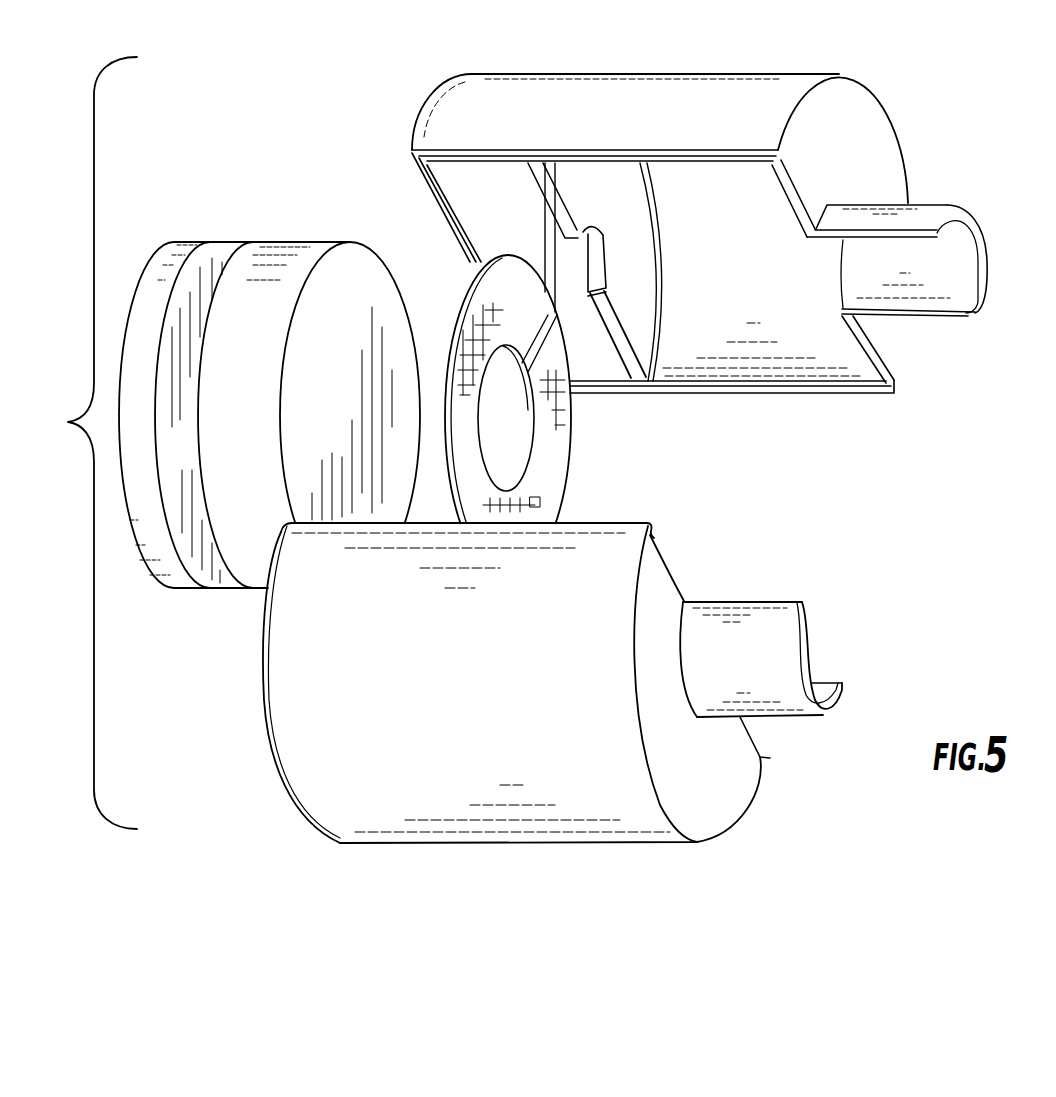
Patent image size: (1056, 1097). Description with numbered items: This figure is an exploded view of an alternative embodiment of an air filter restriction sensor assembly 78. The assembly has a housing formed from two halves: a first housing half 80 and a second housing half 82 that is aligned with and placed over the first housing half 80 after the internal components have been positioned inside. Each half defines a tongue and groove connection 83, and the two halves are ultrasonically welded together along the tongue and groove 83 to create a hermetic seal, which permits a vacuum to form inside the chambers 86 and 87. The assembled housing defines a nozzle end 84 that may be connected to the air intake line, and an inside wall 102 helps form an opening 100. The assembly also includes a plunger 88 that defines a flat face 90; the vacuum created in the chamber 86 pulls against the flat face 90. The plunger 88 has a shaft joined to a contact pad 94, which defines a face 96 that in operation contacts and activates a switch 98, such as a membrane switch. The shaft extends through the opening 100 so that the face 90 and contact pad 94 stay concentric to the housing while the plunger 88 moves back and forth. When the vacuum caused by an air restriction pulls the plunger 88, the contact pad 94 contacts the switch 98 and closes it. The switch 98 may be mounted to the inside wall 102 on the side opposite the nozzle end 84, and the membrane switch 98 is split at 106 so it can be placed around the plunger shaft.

The air filter restriction sensor assembly 78 is at (83, 443).
The first housing half 80 is at (736, 98).
The second housing half 82 is at (610, 793).
The tongue and groove connection 83 is at (881, 392).
The nozzle end 84 is at (927, 212).
The chamber 86 is at (753, 207).
The chamber 87 is at (470, 183).
The plunger 88 is at (292, 250).
The flat face 90 is at (357, 282).
The contact pad 94 is at (187, 247).
The face 96 is at (215, 257).
The switch 98 is at (542, 477).
The opening 100 is at (603, 262).
The inside wall 102 is at (642, 305).
The split 106 is at (527, 347).